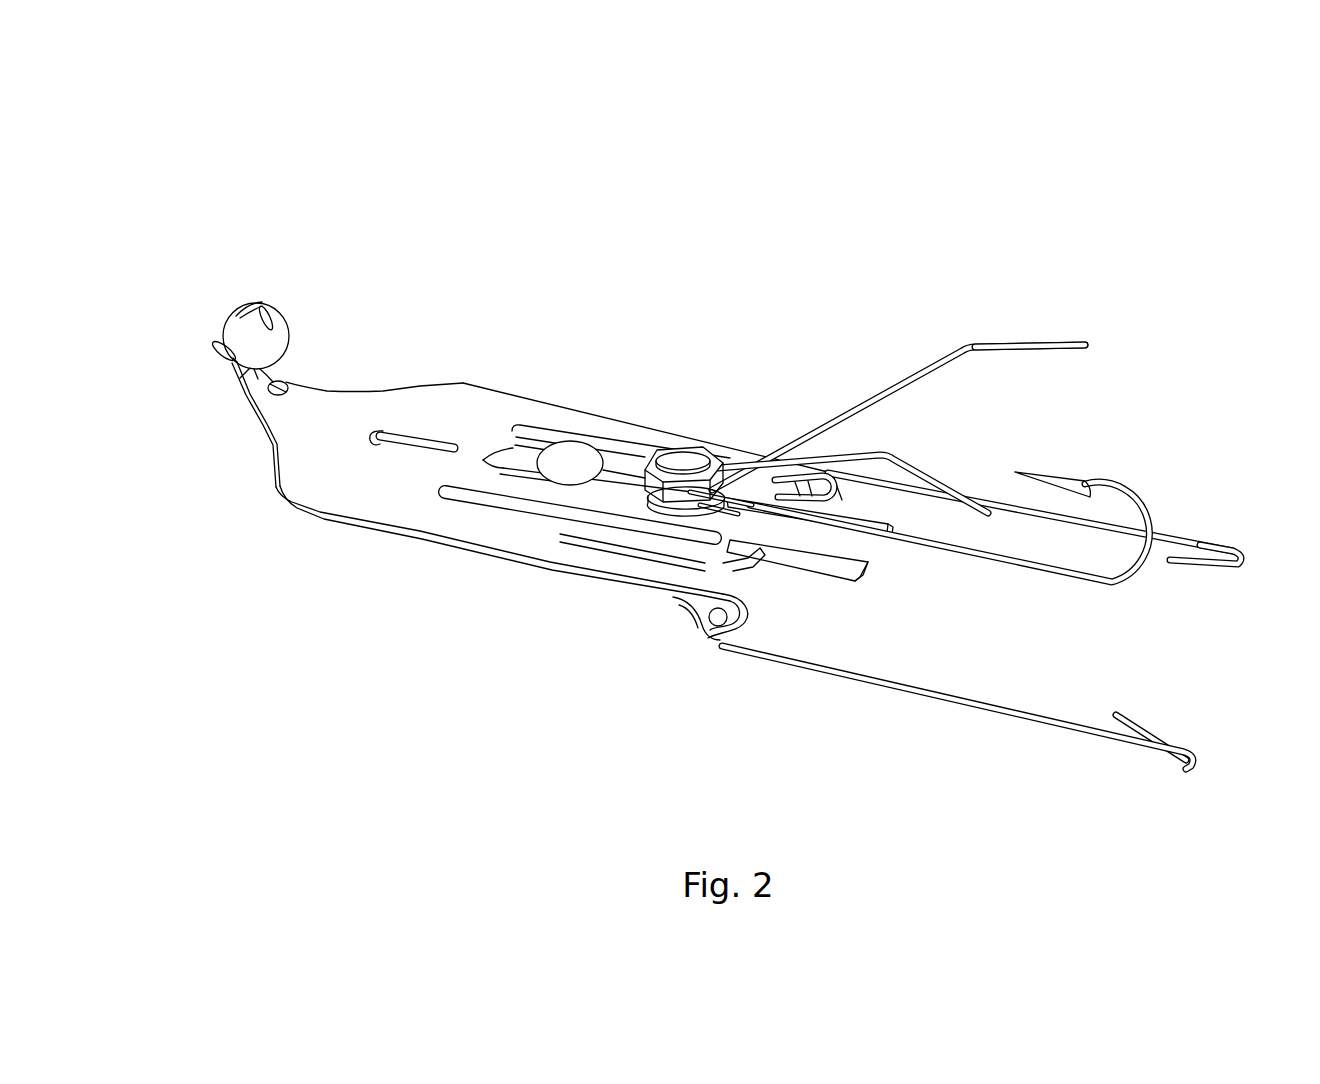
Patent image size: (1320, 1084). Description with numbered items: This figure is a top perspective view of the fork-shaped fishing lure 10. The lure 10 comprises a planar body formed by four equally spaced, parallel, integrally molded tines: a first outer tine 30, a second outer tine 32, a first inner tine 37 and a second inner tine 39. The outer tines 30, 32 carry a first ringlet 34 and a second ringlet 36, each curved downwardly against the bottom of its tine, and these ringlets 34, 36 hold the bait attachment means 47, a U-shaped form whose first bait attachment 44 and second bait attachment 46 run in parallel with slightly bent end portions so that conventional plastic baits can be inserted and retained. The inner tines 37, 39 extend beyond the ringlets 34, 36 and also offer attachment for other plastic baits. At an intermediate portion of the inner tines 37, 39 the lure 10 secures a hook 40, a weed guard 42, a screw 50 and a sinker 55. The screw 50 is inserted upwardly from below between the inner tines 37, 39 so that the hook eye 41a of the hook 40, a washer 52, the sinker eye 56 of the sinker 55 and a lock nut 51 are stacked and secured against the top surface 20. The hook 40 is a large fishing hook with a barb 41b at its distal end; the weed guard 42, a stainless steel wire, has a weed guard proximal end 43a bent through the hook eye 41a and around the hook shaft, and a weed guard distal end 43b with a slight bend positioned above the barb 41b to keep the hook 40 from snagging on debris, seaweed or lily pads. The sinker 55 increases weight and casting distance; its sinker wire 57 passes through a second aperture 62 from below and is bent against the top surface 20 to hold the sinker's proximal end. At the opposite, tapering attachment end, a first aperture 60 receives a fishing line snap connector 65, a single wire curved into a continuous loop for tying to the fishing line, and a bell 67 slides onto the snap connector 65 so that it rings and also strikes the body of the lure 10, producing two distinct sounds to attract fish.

The fork-shaped fishing lure 10 is at (262, 193).
The top surface 20 is at (365, 485).
The first outer tine 30 is at (652, 567).
The second outer tine 32 is at (745, 455).
The first ringlet 34 is at (718, 628).
The second ringlet 36 is at (788, 470).
The first inner tine 37 is at (820, 565).
The second inner tine 39 is at (885, 532).
The hook 40 is at (1095, 582).
The hook eye 41a is at (660, 515).
The barb 41b is at (1070, 480).
The weed guard 42 is at (856, 353).
The weed guard proximal end 43a is at (728, 512).
The weed guard distal end 43b is at (990, 343).
The first bait attachment 44 is at (1027, 715).
The second bait attachment 46 is at (1207, 540).
The bait attachment means 47 is at (742, 580).
The screw 50 is at (680, 455).
The lock nut 51 is at (713, 462).
The washer 52 is at (715, 520).
The sinker 55 is at (565, 455).
The sinker eye 56 is at (637, 502).
The sinker wire 57 is at (510, 455).
The first aperture 60 is at (287, 385).
The second aperture 62 is at (378, 433).
The fishing line snap connector 65 is at (220, 355).
The bell 67 is at (290, 325).